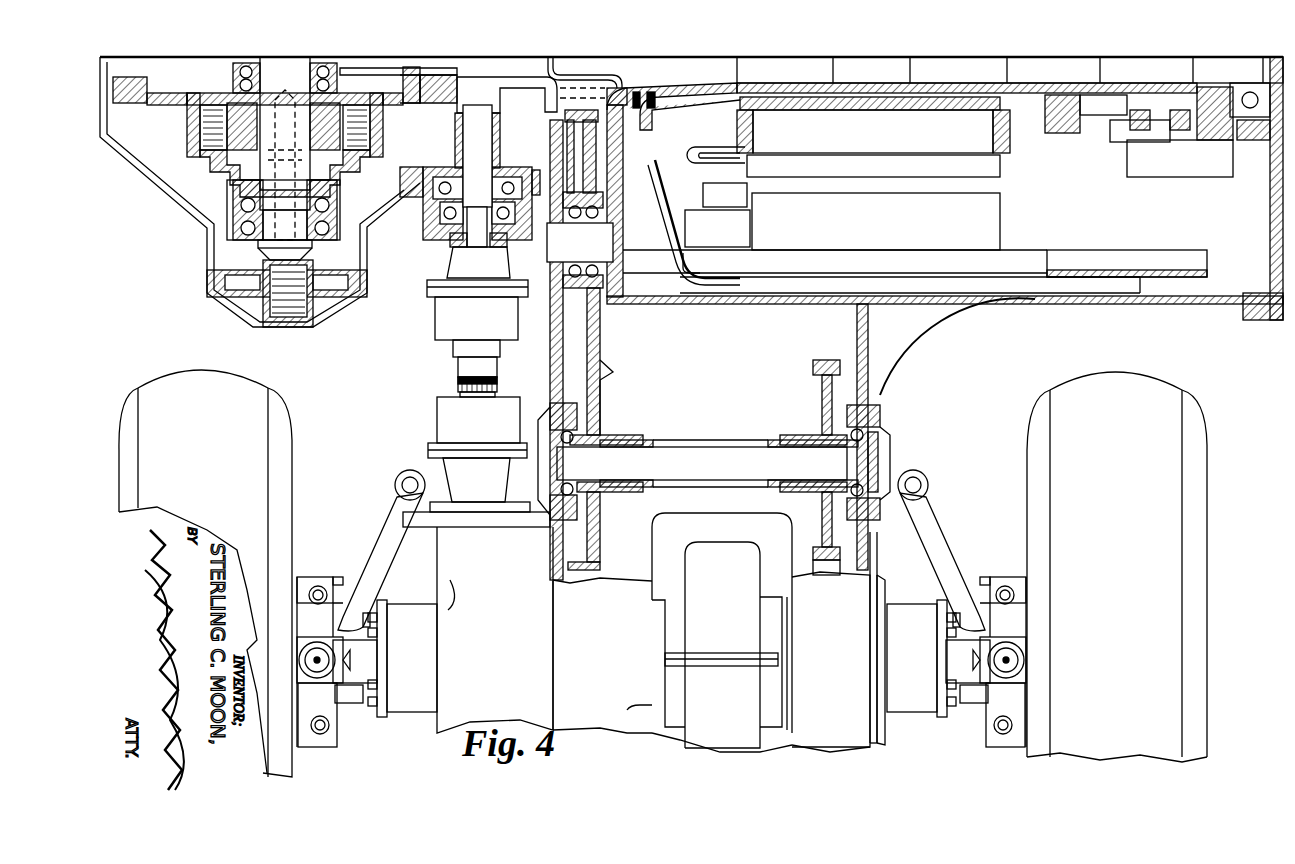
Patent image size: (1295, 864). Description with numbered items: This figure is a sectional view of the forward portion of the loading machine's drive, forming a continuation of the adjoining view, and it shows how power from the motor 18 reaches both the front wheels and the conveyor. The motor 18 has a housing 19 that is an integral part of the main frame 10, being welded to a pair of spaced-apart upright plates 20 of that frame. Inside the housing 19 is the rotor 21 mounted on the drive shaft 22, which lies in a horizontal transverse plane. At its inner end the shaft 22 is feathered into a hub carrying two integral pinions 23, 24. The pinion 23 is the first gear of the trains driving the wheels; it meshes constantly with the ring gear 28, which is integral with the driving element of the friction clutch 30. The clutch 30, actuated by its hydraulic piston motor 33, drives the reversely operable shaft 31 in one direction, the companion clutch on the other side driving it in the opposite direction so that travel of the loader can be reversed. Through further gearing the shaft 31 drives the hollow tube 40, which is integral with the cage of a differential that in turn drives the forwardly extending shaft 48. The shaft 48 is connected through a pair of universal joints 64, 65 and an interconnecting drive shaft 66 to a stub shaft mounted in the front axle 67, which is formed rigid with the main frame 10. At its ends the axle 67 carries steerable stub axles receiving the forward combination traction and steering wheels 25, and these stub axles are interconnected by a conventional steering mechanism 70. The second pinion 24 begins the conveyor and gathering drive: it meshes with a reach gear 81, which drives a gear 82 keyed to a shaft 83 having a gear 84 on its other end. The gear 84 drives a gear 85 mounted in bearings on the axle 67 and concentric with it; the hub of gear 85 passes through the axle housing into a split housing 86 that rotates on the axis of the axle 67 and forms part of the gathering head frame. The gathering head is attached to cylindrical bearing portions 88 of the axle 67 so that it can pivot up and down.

The main frame 10 is at (893, 393).
The motor 18 is at (1061, 300).
The housing 19 is at (958, 305).
The upright plates 20 is at (563, 322).
The rotor 21 is at (846, 191).
The drive shaft 22 is at (795, 73).
The pinion 23 is at (447, 73).
The pinion 24 is at (566, 112).
The forward combination traction and steering wheels 25 is at (663, 573).
The ring gear 28 is at (448, 90).
The friction clutch 30 is at (178, 121).
The shaft 31 is at (290, 80).
The piston motor 33 is at (278, 305).
The hollow tube 40 is at (497, 140).
The shaft 48 is at (472, 153).
The universal joint 64 is at (477, 293).
The universal joint 65 is at (476, 462).
The interconnecting drive shaft 66 is at (458, 392).
The front axle 67 is at (544, 630).
The steering mechanism 70 is at (942, 510).
The reach gear 81 is at (600, 358).
The gear 82 is at (600, 403).
The shaft 83 is at (722, 462).
The gear 84 is at (815, 373).
The gear 85 is at (827, 575).
The split housing 86 is at (722, 632).
The cylindrical bearing portions 88 is at (662, 658).